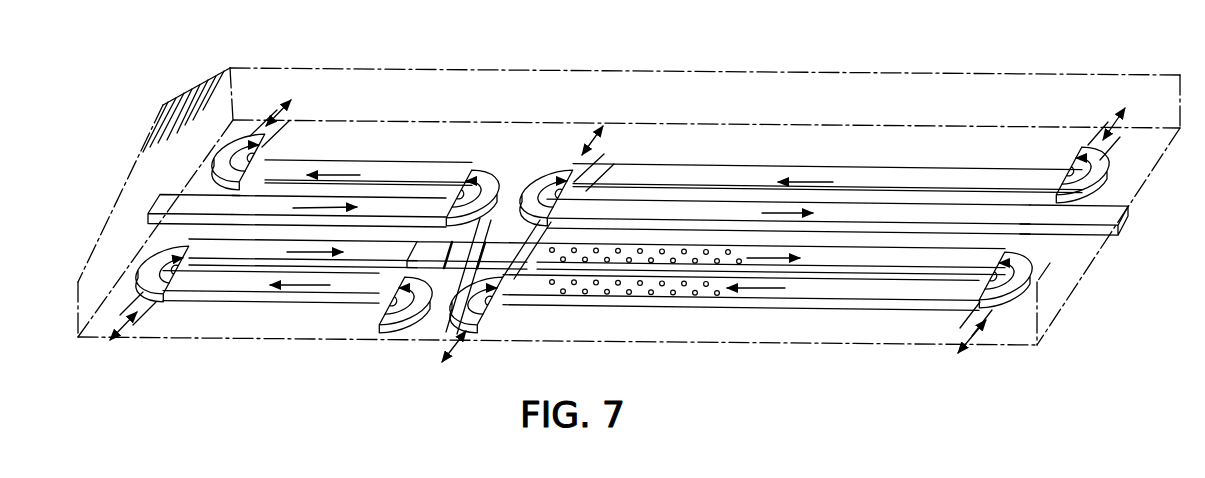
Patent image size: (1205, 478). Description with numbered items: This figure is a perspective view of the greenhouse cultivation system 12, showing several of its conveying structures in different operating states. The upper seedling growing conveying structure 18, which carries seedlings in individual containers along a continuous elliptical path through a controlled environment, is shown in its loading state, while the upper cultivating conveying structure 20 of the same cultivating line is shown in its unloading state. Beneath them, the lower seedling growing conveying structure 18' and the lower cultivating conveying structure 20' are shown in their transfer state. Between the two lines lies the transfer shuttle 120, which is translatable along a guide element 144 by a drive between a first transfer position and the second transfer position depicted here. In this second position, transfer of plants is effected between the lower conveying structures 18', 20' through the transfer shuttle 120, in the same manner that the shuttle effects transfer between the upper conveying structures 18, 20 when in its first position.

The system 12 is at (942, 143).
The seedling growing conveying structure 18 is at (323, 129).
The lower seedling growing conveying structure 18' is at (271, 313).
The cultivating conveying structure 20 is at (824, 133).
The lower cultivating conveying structure 20' is at (741, 318).
The transfer shuttle 120 is at (491, 262).
The guide element 144 is at (491, 262).